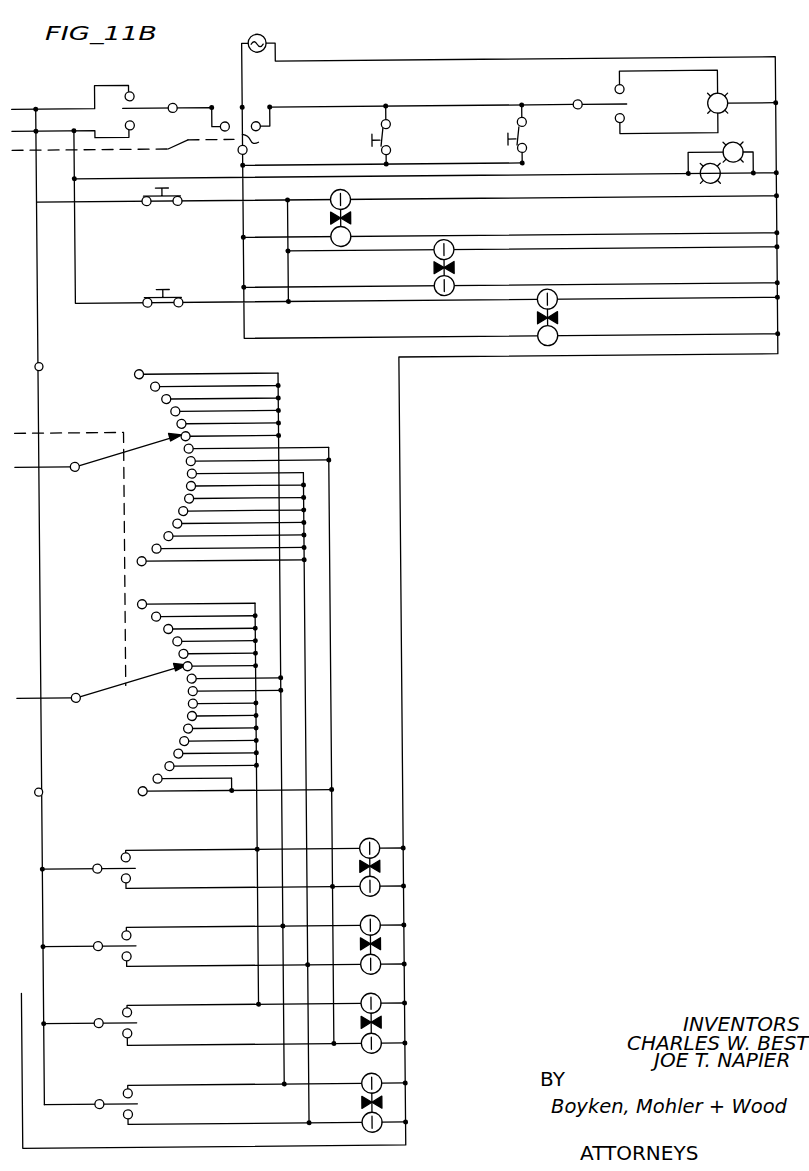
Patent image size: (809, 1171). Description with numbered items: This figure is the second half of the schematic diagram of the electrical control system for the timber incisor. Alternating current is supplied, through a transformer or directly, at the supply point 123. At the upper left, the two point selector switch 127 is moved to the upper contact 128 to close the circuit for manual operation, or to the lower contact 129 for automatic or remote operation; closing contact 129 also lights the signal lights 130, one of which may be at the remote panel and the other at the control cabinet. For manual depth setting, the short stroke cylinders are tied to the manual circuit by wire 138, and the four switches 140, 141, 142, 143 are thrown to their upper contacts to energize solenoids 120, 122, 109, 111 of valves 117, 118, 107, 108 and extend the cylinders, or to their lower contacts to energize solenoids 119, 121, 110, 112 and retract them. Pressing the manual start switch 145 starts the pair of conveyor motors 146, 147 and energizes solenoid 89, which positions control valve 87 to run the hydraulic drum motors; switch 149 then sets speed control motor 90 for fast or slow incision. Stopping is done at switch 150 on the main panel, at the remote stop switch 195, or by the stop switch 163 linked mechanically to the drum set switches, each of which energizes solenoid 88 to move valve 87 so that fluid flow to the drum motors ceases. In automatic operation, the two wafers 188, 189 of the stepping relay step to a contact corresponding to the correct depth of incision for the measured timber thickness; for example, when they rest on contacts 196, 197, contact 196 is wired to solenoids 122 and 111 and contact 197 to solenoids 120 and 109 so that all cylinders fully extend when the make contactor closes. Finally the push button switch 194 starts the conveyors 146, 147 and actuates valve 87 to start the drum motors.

The control valve 87 is at (434, 268).
The solenoid 88 is at (459, 282).
The solenoid 89 is at (453, 243).
The speed control motor 90 is at (729, 97).
The valve 107 is at (378, 1022).
The valve 108 is at (378, 1102).
The solenoid 109 is at (375, 996).
The solenoid 110 is at (380, 1049).
The solenoid 111 is at (366, 1076).
The solenoid 112 is at (365, 1116).
The valve 117 is at (378, 866).
The valve 118 is at (378, 944).
The solenoid 119 is at (380, 892).
The solenoid 120 is at (386, 819).
The solenoid 121 is at (380, 970).
The solenoid 122 is at (375, 918).
The alternating current supply 123 is at (271, 36).
The two point selector switch 127 is at (154, 106).
The upper contact 128 is at (137, 90).
The lower contact 129 is at (139, 125).
The signal light 130 is at (738, 144).
The wire 138 is at (62, 789).
The switch 140 is at (111, 864).
The switch 141 is at (109, 942).
The switch 142 is at (108, 1018).
The switch 143 is at (117, 1098).
The manual start switch 145 is at (166, 204).
The conveyor motor 146 is at (356, 218).
The conveyor motor 147 is at (562, 319).
The switch 149 is at (611, 102).
The switch 150 is at (509, 132).
The stop switch 163 is at (263, 142).
The wafer 188 is at (107, 466).
The wafer 189 is at (115, 687).
The push button switch 194 is at (170, 287).
The stop switch 195 is at (372, 132).
The contact 196 is at (182, 432).
The contact 197 is at (185, 683).